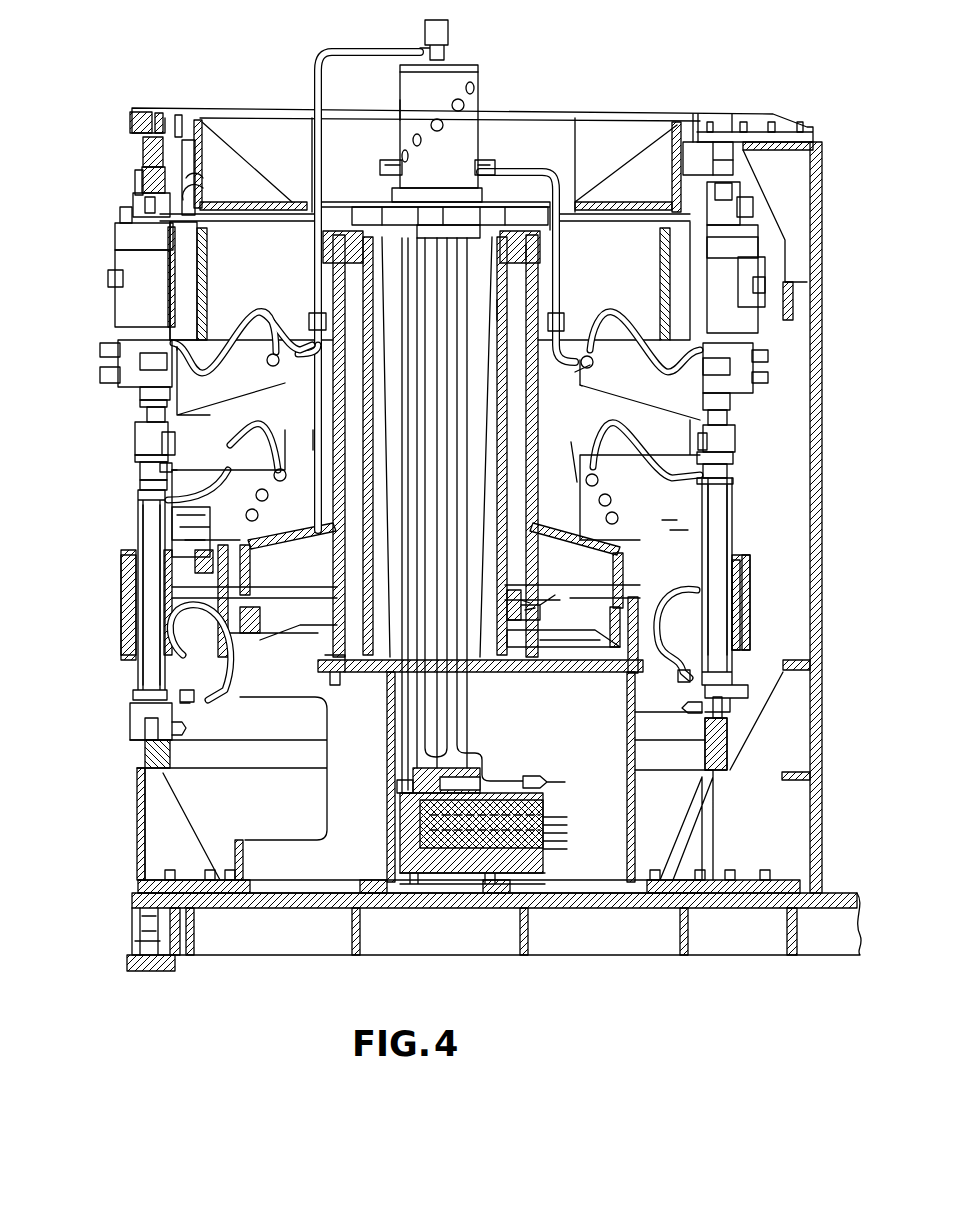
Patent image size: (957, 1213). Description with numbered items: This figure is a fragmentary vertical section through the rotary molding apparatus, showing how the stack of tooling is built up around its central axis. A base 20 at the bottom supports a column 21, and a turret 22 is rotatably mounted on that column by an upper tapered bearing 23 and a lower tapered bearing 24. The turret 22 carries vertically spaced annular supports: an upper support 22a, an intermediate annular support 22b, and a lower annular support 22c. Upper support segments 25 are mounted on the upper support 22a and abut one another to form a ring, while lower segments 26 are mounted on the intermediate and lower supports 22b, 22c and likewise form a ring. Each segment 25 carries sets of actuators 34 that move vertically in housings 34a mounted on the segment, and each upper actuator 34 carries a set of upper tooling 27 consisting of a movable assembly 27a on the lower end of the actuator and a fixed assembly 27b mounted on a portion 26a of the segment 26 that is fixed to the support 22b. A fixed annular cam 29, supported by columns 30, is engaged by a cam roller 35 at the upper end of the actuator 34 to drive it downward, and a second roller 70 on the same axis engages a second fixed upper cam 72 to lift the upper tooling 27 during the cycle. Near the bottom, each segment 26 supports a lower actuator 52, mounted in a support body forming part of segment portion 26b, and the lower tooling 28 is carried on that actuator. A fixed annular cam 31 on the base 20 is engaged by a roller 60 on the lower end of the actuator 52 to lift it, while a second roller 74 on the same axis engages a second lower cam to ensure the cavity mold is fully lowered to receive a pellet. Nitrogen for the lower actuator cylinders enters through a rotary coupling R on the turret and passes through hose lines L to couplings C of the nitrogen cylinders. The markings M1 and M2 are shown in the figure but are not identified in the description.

The base 20 is at (528, 757).
The column 21 is at (508, 307).
The turret 22 is at (551, 408).
The upper support 22a is at (208, 280).
The annular support 22b is at (282, 406).
The lower annular support 22c is at (263, 553).
The upper tapered bearing 23 is at (525, 258).
The lower tapered bearing 24 is at (537, 607).
The upper support segment 25 is at (182, 258).
The lower segment 26 is at (123, 590).
The segment portion 26a is at (165, 468).
The segment portion 26b is at (753, 603).
The upper tooling 27 is at (134, 433).
The movable assembly 27a is at (770, 380).
The fixed assembly 27b is at (748, 427).
The lower tooling 28 is at (125, 500).
The fixed annular cam 29 is at (724, 165).
The column 30 is at (813, 863).
The fixed annular cam 31 is at (727, 737).
The actuator 34 is at (147, 331).
The housing 34a is at (117, 308).
The cam roller 35 is at (143, 198).
The lower actuator 52 is at (146, 662).
The roller 60 is at (130, 725).
The second roller 70 is at (215, 188).
The second fixed upper cam 72 is at (200, 240).
The second roller 74 is at (186, 734).
The line L is at (383, 48).
The rotary coupling R is at (462, 106).
The coupling C is at (184, 705).
The first motor M1 is at (563, 378).
The second motor M2 is at (564, 448).